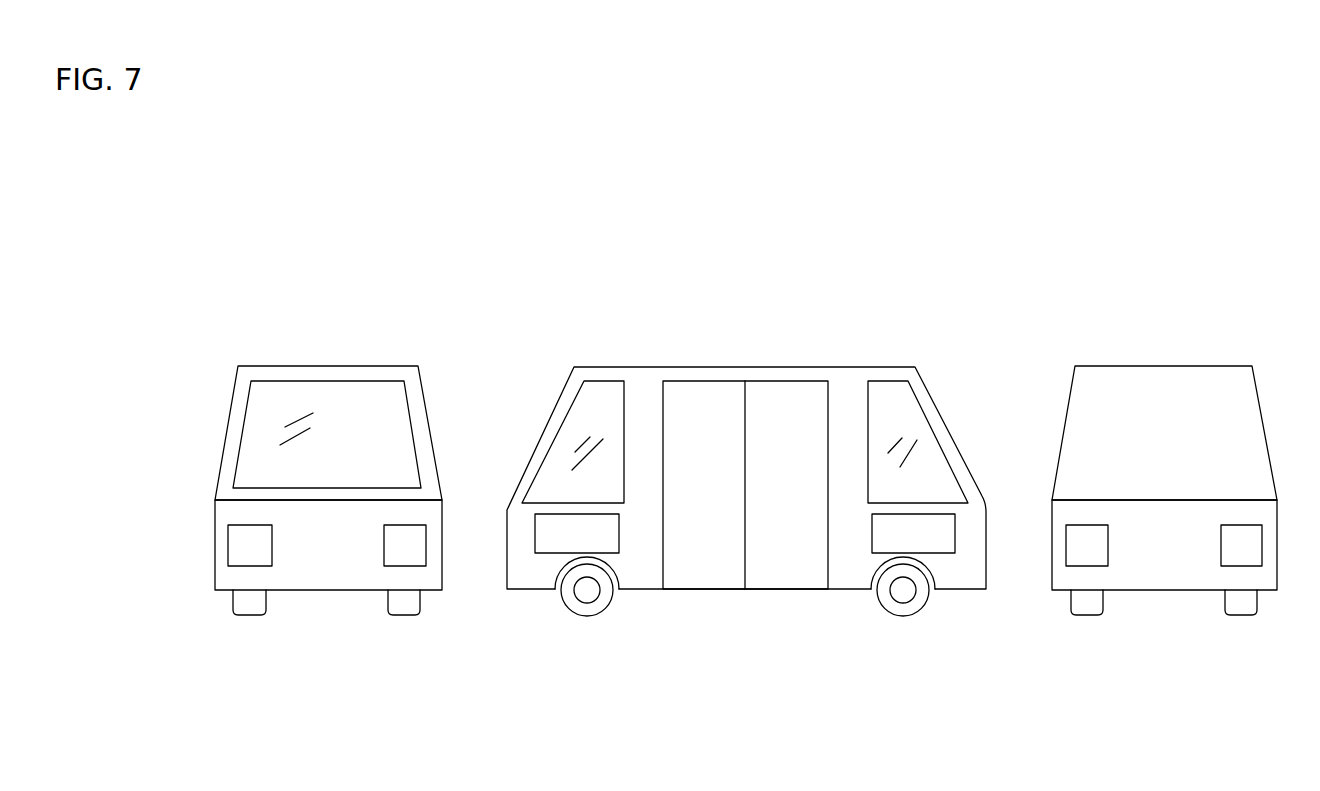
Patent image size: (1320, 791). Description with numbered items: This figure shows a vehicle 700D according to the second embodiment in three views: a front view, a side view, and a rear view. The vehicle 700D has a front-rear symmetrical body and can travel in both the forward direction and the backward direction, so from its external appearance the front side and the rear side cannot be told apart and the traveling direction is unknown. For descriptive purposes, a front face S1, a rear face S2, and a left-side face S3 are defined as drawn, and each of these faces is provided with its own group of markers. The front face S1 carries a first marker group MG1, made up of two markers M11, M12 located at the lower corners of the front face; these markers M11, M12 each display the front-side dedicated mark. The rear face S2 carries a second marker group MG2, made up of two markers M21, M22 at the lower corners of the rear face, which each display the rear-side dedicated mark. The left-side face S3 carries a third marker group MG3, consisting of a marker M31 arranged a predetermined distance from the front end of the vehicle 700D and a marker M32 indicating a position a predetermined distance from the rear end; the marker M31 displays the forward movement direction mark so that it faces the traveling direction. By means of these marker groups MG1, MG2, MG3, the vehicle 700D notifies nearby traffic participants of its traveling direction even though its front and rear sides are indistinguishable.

The vehicle 700D is at (1281, 163).
The front face S1 is at (542, 403).
The rear face S2 is at (948, 400).
The left-side face S3 is at (647, 396).
The marker M11 is at (272, 547).
The marker M12 is at (384, 547).
The marker M21 is at (1108, 547).
The marker M22 is at (1221, 547).
The marker M31 is at (621, 542).
The marker M32 is at (888, 601).
The first marker group MG1 is at (327, 629).
The second marker group MG2 is at (1164, 629).
The third marker group MG3 is at (745, 624).